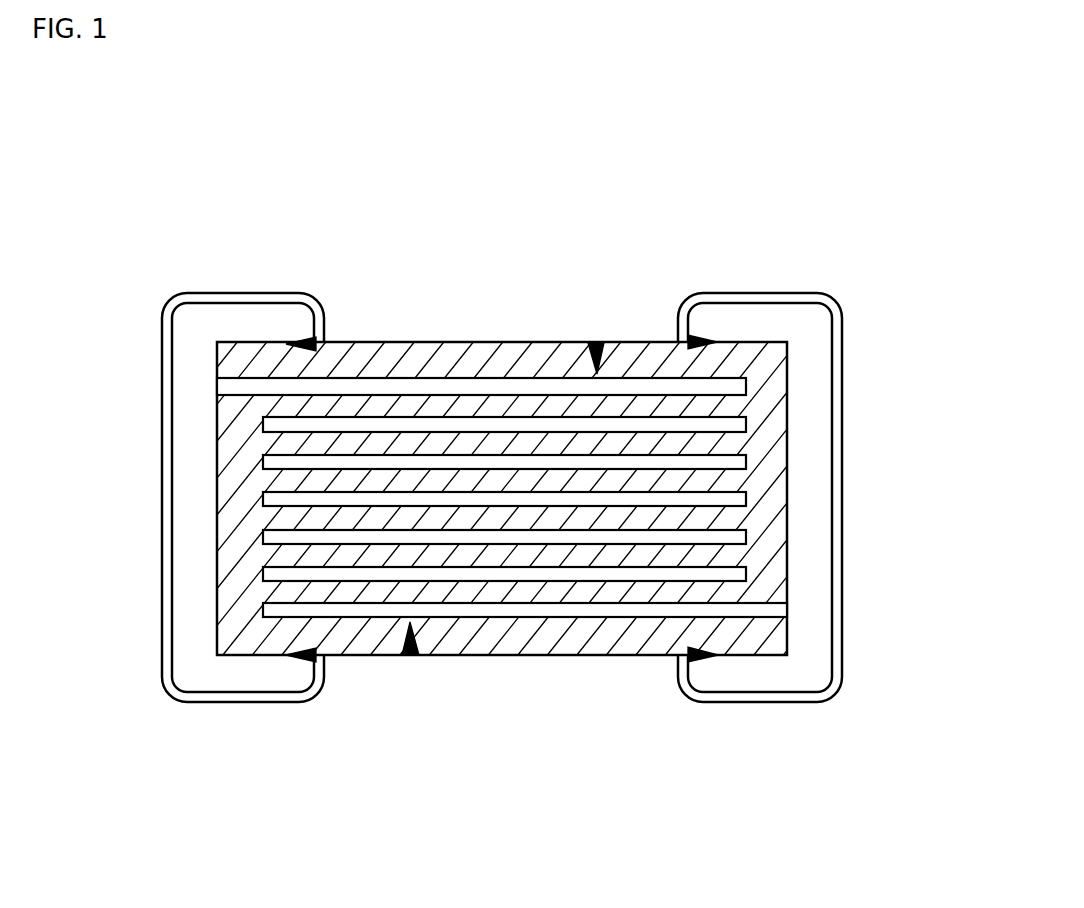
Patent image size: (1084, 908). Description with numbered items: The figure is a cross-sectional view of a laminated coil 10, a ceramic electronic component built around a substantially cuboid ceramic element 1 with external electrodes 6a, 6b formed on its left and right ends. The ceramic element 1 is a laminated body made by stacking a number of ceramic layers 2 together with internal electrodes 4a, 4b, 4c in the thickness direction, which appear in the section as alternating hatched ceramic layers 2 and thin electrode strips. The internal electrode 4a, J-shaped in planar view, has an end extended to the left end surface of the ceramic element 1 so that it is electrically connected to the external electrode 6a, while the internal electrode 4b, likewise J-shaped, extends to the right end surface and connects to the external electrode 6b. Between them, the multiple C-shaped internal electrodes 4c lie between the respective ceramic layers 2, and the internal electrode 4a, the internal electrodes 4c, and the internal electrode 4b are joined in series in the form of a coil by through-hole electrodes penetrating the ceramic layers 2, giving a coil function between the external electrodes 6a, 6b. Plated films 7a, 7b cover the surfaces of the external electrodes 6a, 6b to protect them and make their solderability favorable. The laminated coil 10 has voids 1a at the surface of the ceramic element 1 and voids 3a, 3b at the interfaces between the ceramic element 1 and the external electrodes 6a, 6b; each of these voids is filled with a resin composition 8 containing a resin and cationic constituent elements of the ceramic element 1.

The laminated coil 10 is at (192, 197).
The ceramic element 1 is at (428, 357).
The voids 1a is at (590, 352).
The ceramic layers 2 is at (280, 367).
The voids 3a is at (207, 503).
The voids 3b is at (810, 499).
The internal electrode 4a is at (280, 389).
The internal electrode 4b is at (525, 613).
The internal electrodes 4c is at (635, 425).
The external electrode 6a is at (190, 343).
The external electrode 6b is at (815, 340).
The plated film 7a is at (172, 306).
The plated film 7b is at (832, 298).
The resin composition 8 is at (317, 340).